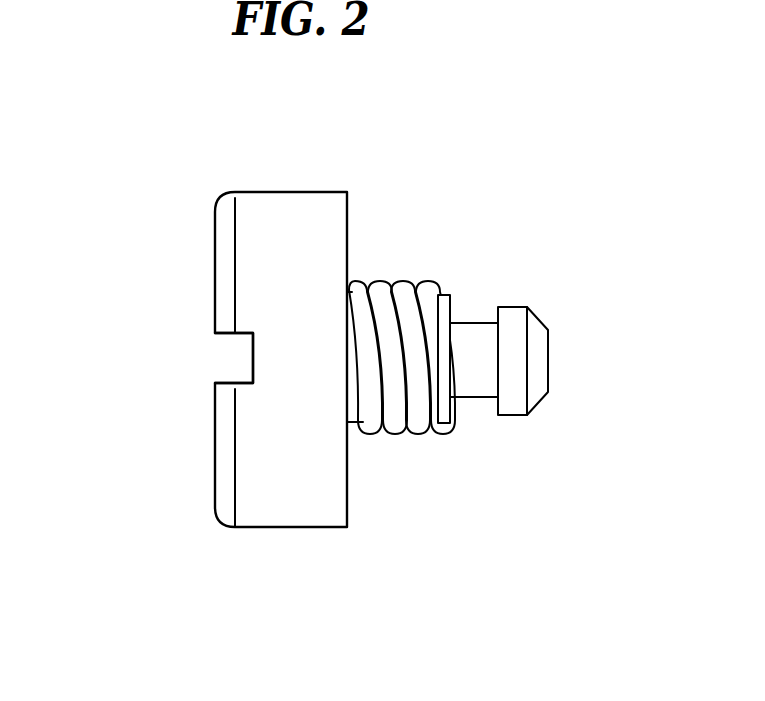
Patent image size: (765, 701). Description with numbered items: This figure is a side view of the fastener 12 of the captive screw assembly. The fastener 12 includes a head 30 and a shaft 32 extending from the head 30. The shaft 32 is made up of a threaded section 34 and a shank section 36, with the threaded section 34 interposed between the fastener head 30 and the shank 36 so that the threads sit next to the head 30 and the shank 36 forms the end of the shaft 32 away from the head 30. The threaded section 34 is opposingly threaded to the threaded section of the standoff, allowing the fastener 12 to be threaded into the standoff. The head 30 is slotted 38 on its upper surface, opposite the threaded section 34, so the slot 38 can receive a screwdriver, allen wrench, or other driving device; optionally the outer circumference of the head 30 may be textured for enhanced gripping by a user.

The fastener 12 is at (295, 170).
The head 30 is at (230, 527).
The shaft 32 is at (465, 290).
The threaded section 34 is at (432, 432).
The shank section 36 is at (548, 392).
The slot 38 is at (220, 343).